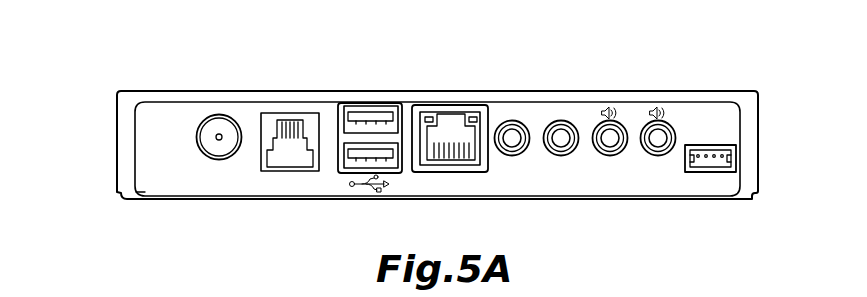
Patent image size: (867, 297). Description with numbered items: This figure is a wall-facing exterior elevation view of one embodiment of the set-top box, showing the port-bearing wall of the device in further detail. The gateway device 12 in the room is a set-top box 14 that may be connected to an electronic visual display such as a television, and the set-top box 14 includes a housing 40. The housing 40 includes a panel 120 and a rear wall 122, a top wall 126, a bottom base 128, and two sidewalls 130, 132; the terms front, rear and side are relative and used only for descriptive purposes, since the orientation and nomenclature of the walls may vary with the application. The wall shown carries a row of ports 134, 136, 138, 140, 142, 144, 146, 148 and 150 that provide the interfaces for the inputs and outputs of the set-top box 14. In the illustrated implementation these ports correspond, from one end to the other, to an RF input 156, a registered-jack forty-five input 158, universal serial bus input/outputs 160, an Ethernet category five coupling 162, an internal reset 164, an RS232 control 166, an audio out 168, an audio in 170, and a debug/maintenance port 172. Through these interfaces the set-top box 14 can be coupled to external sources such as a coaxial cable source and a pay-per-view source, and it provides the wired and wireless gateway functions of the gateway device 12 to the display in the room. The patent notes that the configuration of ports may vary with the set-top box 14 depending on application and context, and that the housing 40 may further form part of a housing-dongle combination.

The gateway device 12 is at (122, 78).
The set-top box 14 is at (146, 185).
The housing 40 is at (741, 90).
The panel 120 is at (116, 163).
The rear wall 122 is at (185, 196).
The top wall 126 is at (187, 90).
The bottom base 128 is at (312, 198).
The sidewall 130 is at (761, 135).
The sidewall 132 is at (117, 137).
The port 134 is at (219, 115).
The port 136 is at (293, 120).
The port 138 is at (373, 113).
The port 140 is at (453, 112).
The port 142 is at (512, 120).
The port 144 is at (563, 120).
The port 146 is at (612, 121).
The port 148 is at (660, 121).
The port 150 is at (737, 162).
The RF input 156 is at (220, 160).
The RJ-45 input 158 is at (270, 168).
The universal serial bus (USB) input/outputs 160 is at (362, 170).
The Ethernet category 5 (Cat 5) coupling 162 is at (450, 173).
The internal reset 164 is at (513, 158).
The RS232 control 166 is at (561, 158).
The audio out 168 is at (609, 158).
The audio in 170 is at (658, 158).
The debug/maintenance port 172 is at (712, 170).